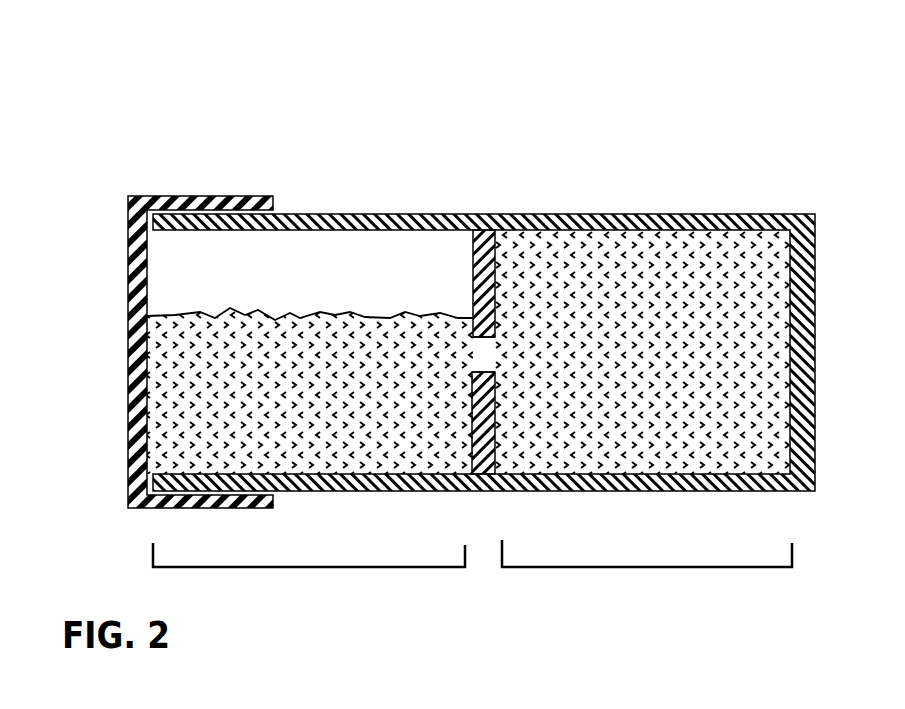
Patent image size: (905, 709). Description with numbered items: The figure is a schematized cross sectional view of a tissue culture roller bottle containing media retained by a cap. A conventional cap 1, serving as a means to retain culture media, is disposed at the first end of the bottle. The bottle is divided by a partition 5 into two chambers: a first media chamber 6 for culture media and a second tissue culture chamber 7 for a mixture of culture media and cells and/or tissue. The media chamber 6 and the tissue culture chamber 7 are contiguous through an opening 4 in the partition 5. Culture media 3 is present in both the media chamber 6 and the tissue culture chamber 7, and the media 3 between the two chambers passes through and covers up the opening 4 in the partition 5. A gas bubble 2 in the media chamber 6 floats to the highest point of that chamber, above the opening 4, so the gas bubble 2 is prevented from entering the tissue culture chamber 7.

The cap 1 is at (127, 187).
The gas bubble 2 is at (247, 250).
The culture media 3 is at (650, 308).
The opening 4 is at (473, 345).
The partition 5 is at (497, 272).
The media chamber 6 is at (309, 572).
The tissue culture chamber 7 is at (647, 570).